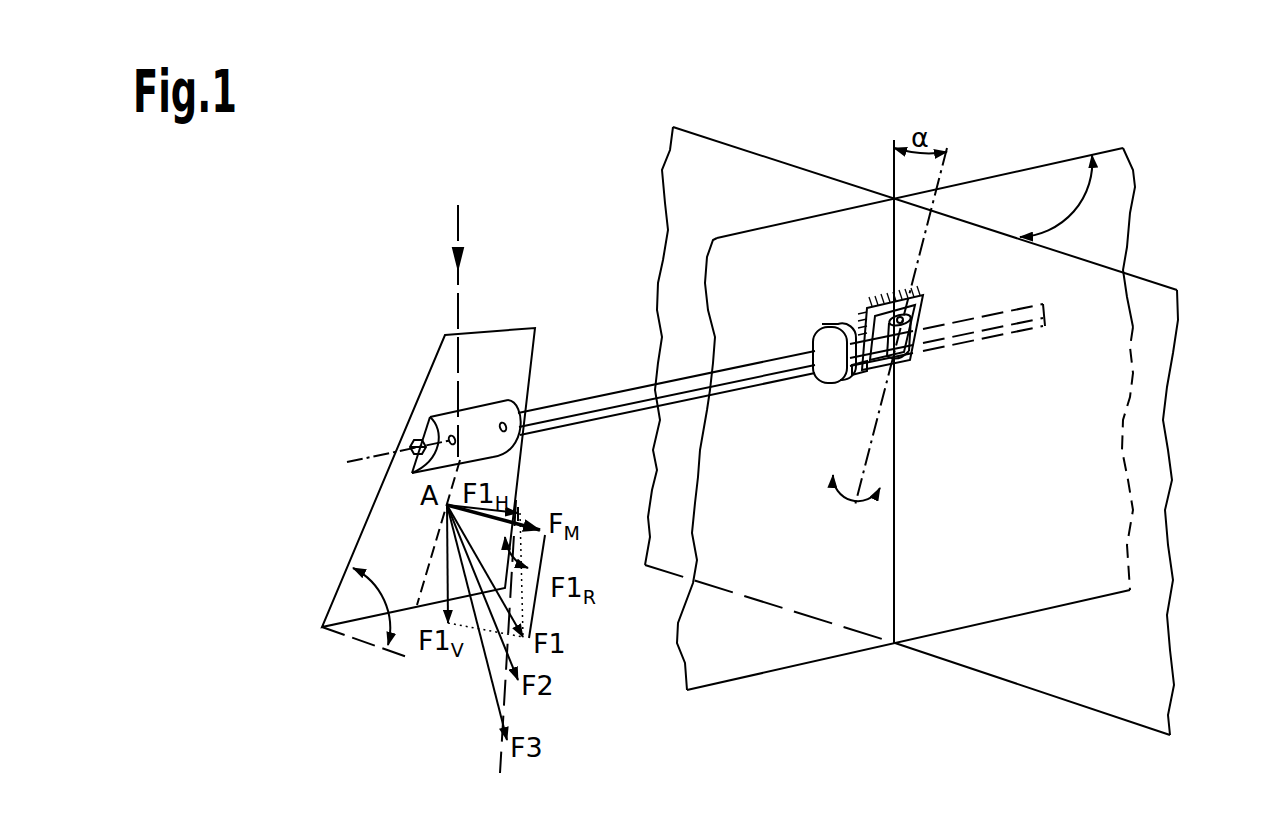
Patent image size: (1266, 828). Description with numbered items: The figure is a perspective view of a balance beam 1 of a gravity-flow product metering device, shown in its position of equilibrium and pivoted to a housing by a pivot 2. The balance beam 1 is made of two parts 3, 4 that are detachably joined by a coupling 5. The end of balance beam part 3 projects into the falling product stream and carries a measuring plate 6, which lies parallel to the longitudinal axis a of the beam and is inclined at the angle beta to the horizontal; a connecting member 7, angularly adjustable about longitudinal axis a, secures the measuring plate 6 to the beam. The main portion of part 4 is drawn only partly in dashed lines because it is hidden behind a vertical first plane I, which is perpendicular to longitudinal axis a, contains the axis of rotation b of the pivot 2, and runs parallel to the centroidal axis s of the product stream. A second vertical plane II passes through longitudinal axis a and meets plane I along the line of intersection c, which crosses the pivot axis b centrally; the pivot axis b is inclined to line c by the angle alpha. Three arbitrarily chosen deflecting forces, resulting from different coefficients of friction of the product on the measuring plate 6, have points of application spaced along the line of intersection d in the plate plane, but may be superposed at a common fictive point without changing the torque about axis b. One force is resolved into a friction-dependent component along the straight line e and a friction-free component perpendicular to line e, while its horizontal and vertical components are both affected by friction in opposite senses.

The balance beam 1 is at (790, 343).
The pivot 2 is at (910, 353).
The balance beam part 3 is at (600, 405).
The balance beam part 4 is at (1032, 308).
The coupling 5 is at (850, 326).
The measuring plate 6 is at (445, 365).
The connecting member 7 is at (448, 423).
The longitudinal axis a is at (347, 462).
The axis of rotation b is at (946, 166).
The line of intersection c is at (893, 596).
The line of intersection d is at (433, 545).
The straight line e is at (500, 773).
The centroidal axis s is at (440, 405).
The first plane I is at (1103, 639).
The second plane II is at (711, 637).